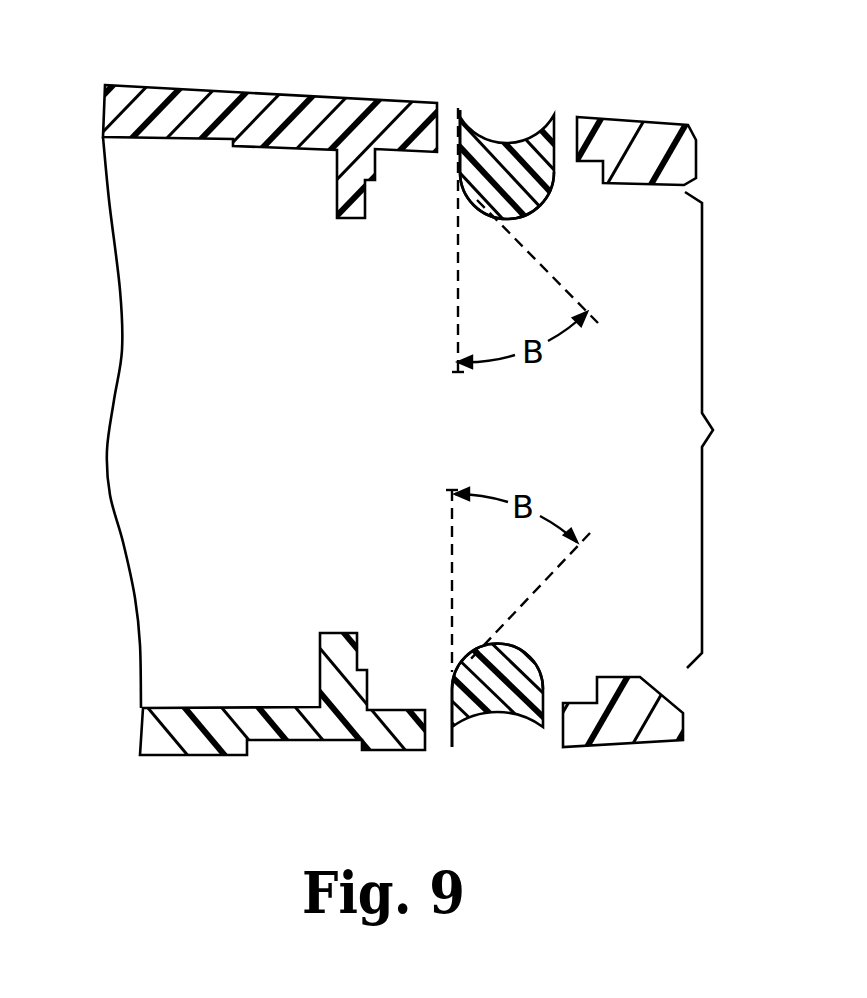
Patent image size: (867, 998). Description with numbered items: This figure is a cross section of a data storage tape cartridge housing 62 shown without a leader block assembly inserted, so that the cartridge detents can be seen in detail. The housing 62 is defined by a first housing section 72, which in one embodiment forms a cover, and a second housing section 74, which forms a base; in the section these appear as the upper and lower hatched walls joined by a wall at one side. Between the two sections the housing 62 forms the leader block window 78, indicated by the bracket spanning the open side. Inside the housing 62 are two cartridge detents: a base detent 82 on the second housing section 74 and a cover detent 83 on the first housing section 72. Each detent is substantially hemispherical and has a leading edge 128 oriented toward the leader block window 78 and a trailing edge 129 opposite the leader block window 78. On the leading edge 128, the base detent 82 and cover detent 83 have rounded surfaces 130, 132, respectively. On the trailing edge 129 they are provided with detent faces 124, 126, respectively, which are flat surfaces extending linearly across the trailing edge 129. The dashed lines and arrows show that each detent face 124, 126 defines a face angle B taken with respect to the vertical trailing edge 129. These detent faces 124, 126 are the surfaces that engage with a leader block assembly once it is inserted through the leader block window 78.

The housing 62 is at (101, 118).
The first housing section 72 is at (140, 86).
The second housing section 74 is at (184, 757).
The leader block window 78 is at (721, 430).
The base detent 82 is at (503, 665).
The cover detent 83 is at (506, 143).
The detent face 124 is at (472, 198).
The detent face 126 is at (470, 655).
The leading edge 128 is at (555, 118).
The trailing edge 129 is at (459, 168).
The rounded surface 130 is at (540, 190).
The rounded surface 132 is at (529, 657).